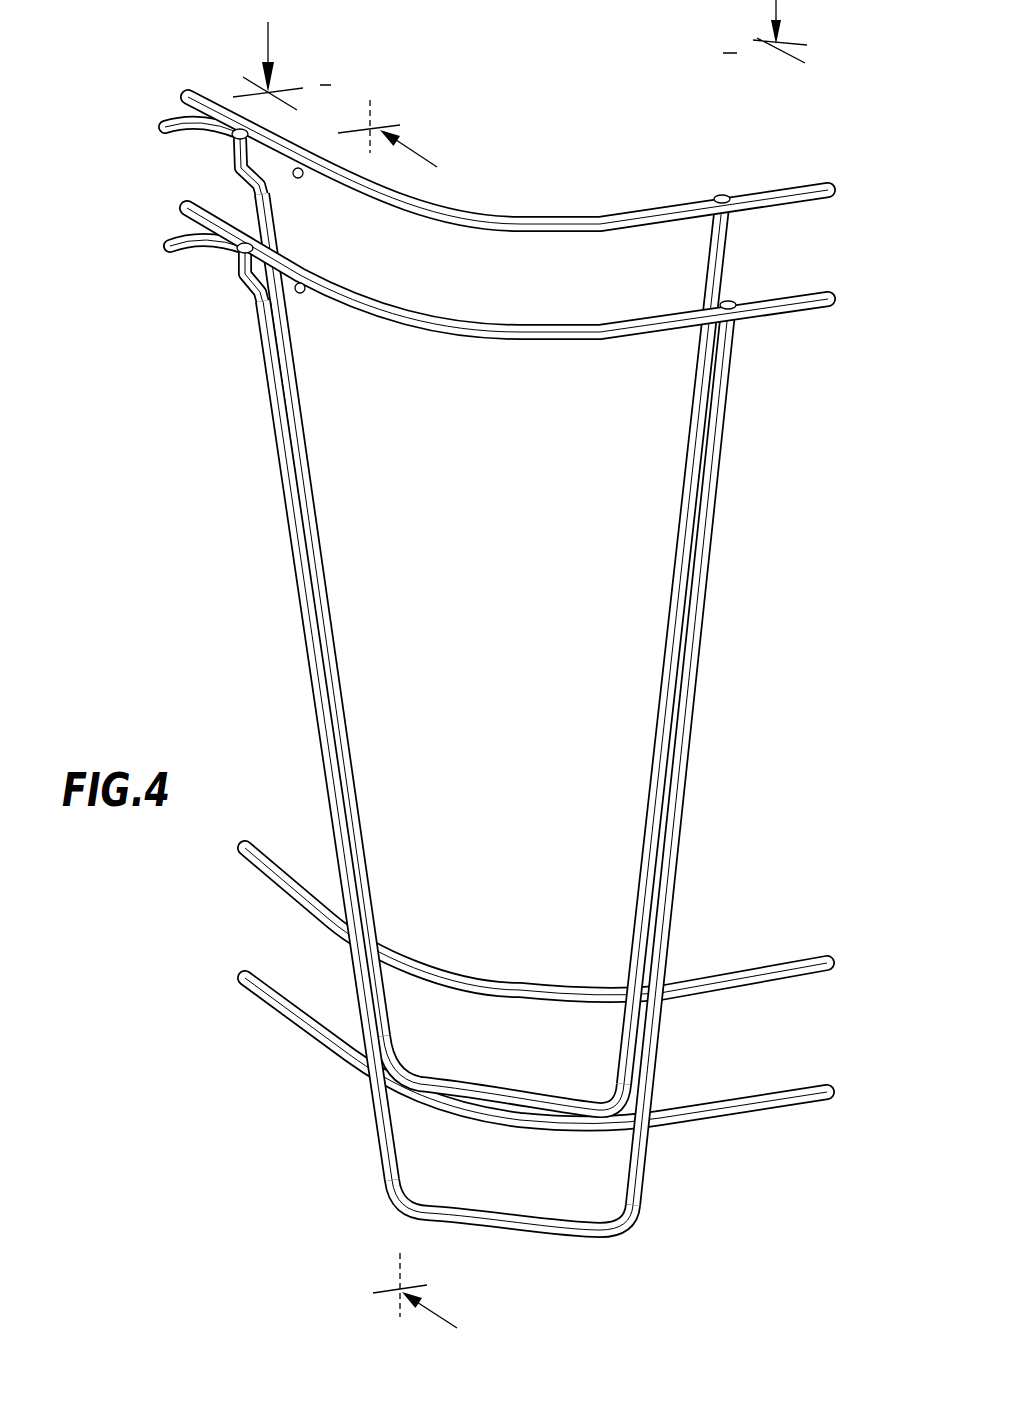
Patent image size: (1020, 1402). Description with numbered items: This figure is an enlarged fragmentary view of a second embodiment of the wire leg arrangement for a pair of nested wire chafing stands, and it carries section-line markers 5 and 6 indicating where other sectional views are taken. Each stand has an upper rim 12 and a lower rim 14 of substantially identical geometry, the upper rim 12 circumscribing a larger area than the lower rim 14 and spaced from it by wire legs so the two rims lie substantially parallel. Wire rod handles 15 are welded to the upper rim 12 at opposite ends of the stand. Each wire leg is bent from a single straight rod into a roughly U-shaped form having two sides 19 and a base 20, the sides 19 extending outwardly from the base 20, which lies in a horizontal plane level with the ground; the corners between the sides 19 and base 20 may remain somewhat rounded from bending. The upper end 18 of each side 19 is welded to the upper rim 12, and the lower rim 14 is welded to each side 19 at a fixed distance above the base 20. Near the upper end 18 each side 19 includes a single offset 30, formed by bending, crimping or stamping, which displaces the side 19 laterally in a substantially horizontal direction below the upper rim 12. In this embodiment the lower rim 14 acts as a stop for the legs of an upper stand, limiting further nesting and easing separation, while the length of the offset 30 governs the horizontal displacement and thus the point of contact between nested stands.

The upper rim 12 is at (599, 213).
The lower rim 14 is at (749, 969).
The wire rod handle 15 is at (162, 119).
The upper end 18 is at (233, 129).
The side 19 is at (292, 576).
The base 20 is at (494, 1082).
The offset 30 is at (236, 170).
The section line 5- 5 is at (406, 722).
The section line 6- 6 is at (520, 55).